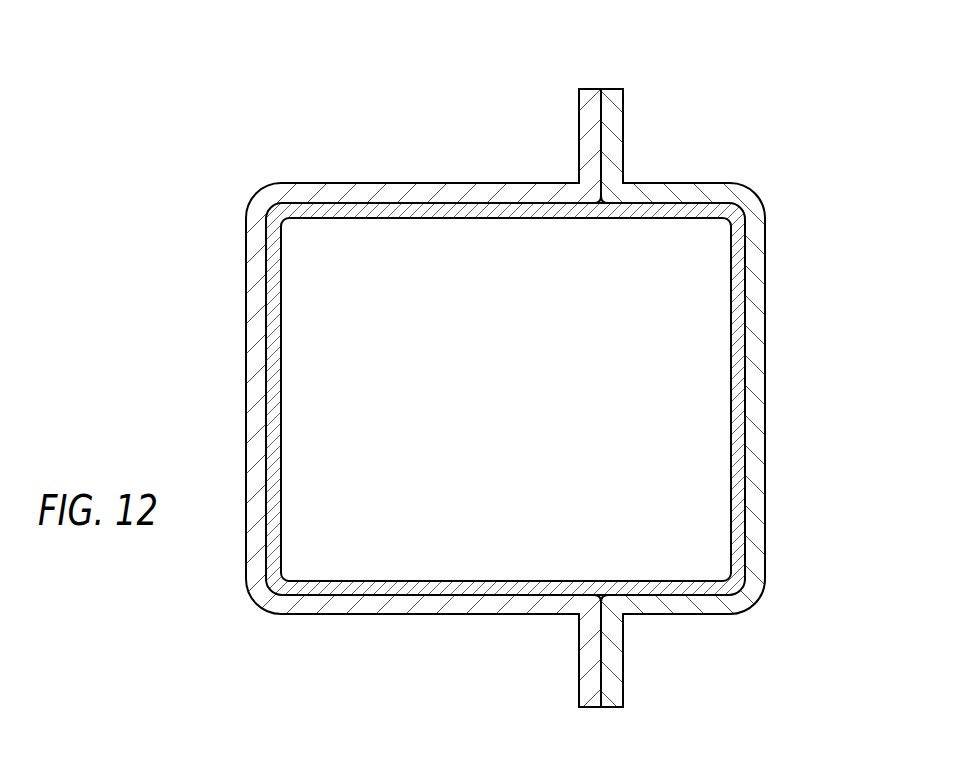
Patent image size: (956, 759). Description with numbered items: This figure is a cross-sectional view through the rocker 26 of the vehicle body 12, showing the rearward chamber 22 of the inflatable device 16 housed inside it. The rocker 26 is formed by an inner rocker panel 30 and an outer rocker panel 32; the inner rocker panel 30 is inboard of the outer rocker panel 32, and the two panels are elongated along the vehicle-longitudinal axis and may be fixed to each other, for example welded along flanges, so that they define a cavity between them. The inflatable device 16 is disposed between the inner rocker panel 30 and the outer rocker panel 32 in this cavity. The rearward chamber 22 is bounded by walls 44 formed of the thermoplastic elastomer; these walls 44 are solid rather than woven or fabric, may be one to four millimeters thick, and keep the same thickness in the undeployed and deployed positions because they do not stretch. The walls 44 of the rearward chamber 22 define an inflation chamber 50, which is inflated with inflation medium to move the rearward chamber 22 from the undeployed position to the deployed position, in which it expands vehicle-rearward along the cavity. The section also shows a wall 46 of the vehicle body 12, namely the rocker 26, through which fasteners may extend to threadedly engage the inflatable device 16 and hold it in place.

The vehicle body 12 is at (482, 368).
The inflatable device 16 is at (724, 447).
The rearward chamber 22 is at (738, 283).
The rocker 26 is at (612, 89).
The inner rocker panel 30 is at (765, 385).
The outer rocker panel 32 is at (246, 302).
The walls 44 is at (390, 205).
The wall 46 is at (578, 183).
The inflation chamber 50 is at (327, 418).